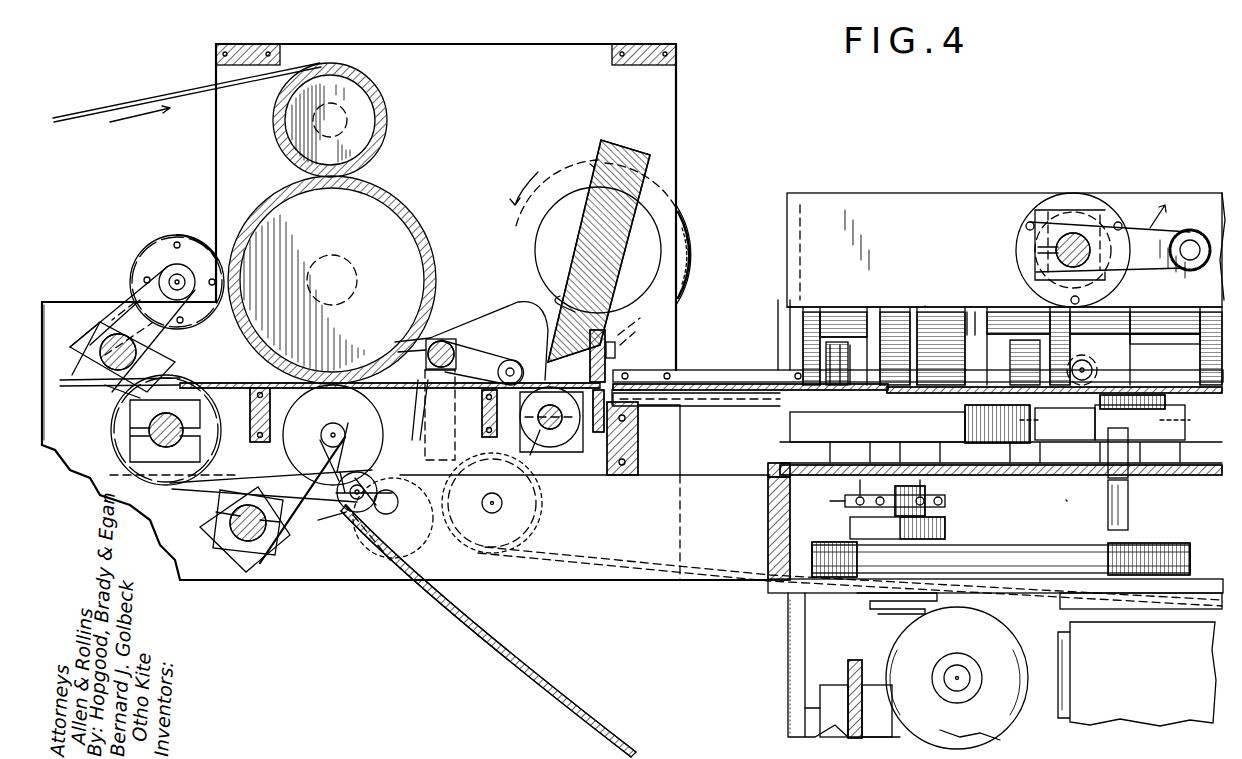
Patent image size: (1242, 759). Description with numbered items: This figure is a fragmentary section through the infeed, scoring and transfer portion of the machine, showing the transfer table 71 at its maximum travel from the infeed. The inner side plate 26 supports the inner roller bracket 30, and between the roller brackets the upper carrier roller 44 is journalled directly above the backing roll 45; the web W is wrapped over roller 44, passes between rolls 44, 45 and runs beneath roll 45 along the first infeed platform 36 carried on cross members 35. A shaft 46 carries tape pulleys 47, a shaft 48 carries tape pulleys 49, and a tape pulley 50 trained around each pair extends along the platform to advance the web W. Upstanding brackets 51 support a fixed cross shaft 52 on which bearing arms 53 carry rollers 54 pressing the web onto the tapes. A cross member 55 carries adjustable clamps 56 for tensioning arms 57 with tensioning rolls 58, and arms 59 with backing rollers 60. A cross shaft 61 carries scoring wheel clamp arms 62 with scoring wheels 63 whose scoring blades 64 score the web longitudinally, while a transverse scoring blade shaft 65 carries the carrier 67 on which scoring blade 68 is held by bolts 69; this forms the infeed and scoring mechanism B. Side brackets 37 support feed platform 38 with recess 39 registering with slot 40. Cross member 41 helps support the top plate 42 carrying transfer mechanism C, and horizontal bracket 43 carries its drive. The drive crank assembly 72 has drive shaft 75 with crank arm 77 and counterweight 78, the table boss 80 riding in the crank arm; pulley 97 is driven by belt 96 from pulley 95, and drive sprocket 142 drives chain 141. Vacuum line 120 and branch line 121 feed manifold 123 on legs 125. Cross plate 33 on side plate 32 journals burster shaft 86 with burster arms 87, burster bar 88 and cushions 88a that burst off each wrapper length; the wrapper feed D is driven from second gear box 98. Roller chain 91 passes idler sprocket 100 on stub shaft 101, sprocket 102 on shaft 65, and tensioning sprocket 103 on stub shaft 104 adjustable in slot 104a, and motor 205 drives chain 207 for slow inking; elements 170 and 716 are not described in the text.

The web W is at (120, 108).
The inner roller bracket 30 is at (668, 90).
The infeed and scoring mechanism B is at (690, 144).
The upper carrier roller 44 is at (380, 100).
The backing roll 45 is at (392, 210).
The scoring wheel 63 is at (160, 245).
The scoring blades 64 is at (185, 232).
The scoring wheel clamp arms 62 is at (118, 312).
The cross shaft 61 is at (100, 343).
The tape pulley 50 is at (180, 372).
The tape pulleys 47 is at (190, 383).
The shaft 46 is at (128, 424).
The cross members 35 is at (250, 396).
The first infeed platform 36 is at (428, 425).
The backing rollers 60 is at (333, 435).
The tensioning rolls 58 is at (372, 488).
The arms 59 is at (272, 472).
The tensioning arms 57 is at (302, 500).
The adjustable clamps 56 is at (282, 545).
The cross member 55 is at (220, 500).
The tape pulleys 49 is at (560, 448).
The shaft 48 is at (537, 450).
The stub shaft 101 is at (536, 506).
The idler sprocket 100 is at (535, 528).
The tensioning sprocket 103 is at (407, 522).
The stub shaft 104 is at (388, 512).
The slot 104a is at (351, 543).
The fixed cross shaft 52 is at (450, 338).
The bearing arms 53 is at (480, 362).
The roller 54 is at (517, 362).
The upstanding brackets 51 is at (418, 378).
The transverse scoring blade shaft 65 is at (610, 240).
The transverse scoring blade carrier 67 is at (618, 145).
The scoring blade 68 is at (606, 328).
The bolts 69 is at (618, 352).
The sprocket 102 is at (685, 222).
The multiple roller chain 91 is at (688, 238).
The plate 170 is at (598, 434).
The counterweight 78 is at (690, 430).
The slot 40 is at (655, 404).
The side brackets 37 is at (690, 370).
The feed platform 38 is at (735, 380).
The recess 39 is at (705, 385).
The top plate 42 is at (768, 470).
The cross member 41 is at (768, 510).
The horizontal bracket 43 is at (768, 588).
The side plate 32 is at (778, 318).
The cross plate 33 is at (885, 200).
The wrapper feed D is at (929, 298).
The burster shaft 86 is at (1055, 248).
The burster arms 87 is at (1130, 215).
The burster bar 88 is at (1172, 262).
The tubular rubber burster cushions 88a is at (1195, 228).
The fixed boss 80 is at (1006, 395).
The transfer table 71 is at (1160, 390).
The arcuate vacuum manifold 123 is at (1130, 404).
The bar 716 is at (875, 392).
The crank arm 77 is at (1054, 424).
The legs 125 is at (1070, 484).
The transfer mechanism C is at (1072, 505).
The drive belt 96 is at (1050, 545).
The pulley 97 is at (835, 542).
The pulley 95 is at (1180, 543).
The drive crank assembly 72 is at (966, 527).
The drive chain 141 is at (945, 495).
The drive sprocket 142 is at (940, 500).
The drive shaft 75 is at (850, 497).
The vacuum line 120 is at (1130, 512).
The branch line 121 is at (1122, 452).
The gear head electric motor 205 is at (1000, 640).
The drive chain 207 is at (868, 645).
The second gear box 98 is at (1140, 652).
The inner side plate 26 is at (596, 580).